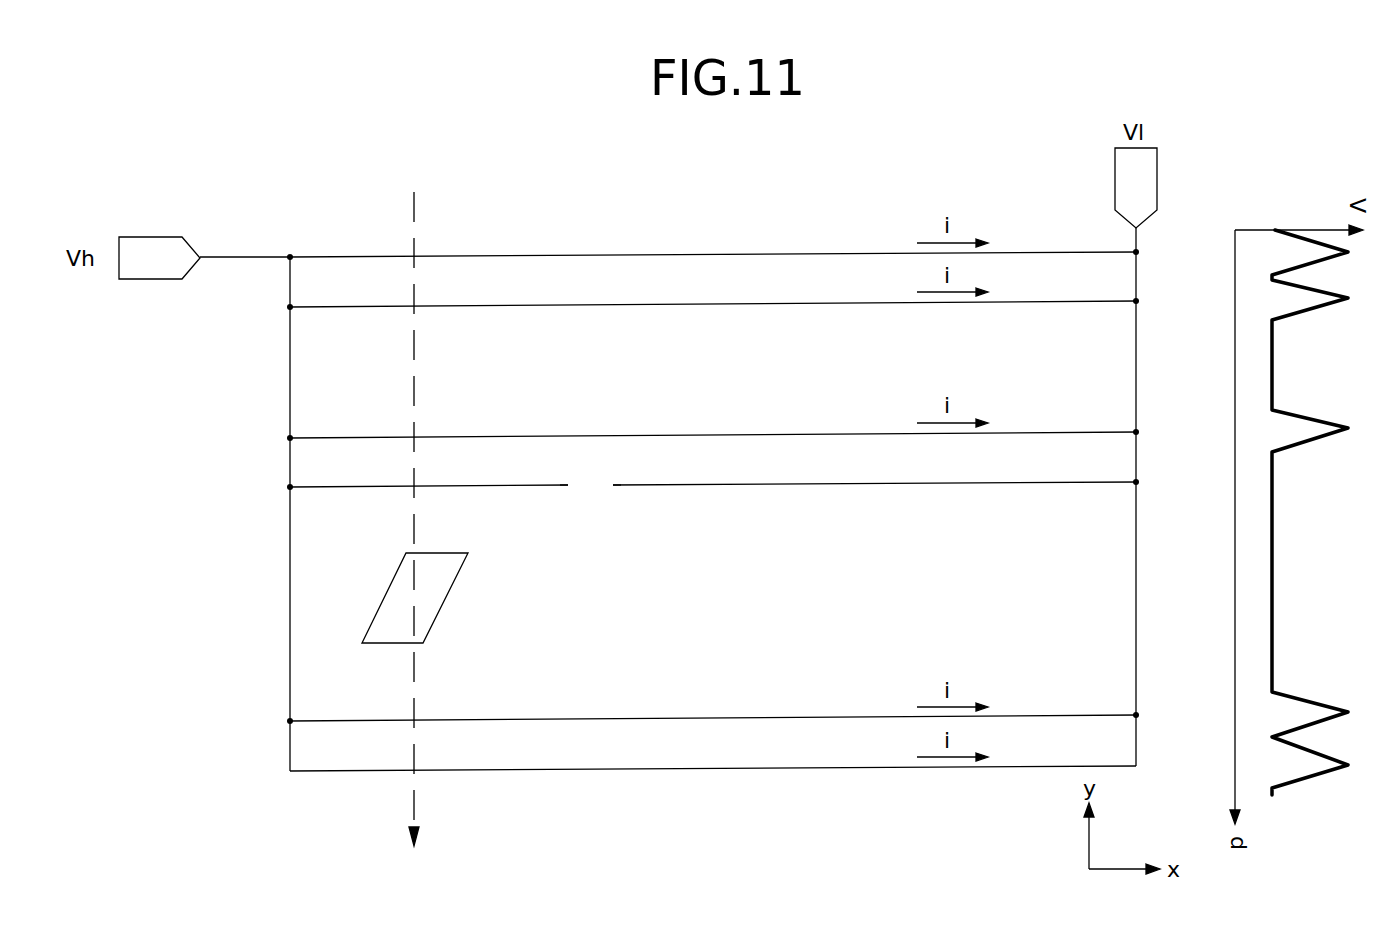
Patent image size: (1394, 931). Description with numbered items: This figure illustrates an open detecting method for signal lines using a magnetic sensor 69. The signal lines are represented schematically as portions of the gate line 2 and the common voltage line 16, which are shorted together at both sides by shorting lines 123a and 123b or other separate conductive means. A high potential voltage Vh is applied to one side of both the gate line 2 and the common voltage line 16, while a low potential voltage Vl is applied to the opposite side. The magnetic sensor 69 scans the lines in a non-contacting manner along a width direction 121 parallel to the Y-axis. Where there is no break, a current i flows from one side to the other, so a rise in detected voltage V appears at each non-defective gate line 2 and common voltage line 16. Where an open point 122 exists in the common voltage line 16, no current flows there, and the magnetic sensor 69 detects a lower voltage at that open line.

The gate line 2 is at (998, 252).
The common voltage line 16 is at (998, 302).
The magnetic sensor 69 is at (448, 597).
The width direction 121 is at (412, 536).
The open point 122 is at (591, 484).
The shorting line 123a is at (289, 612).
The shorting line 123b is at (1138, 614).